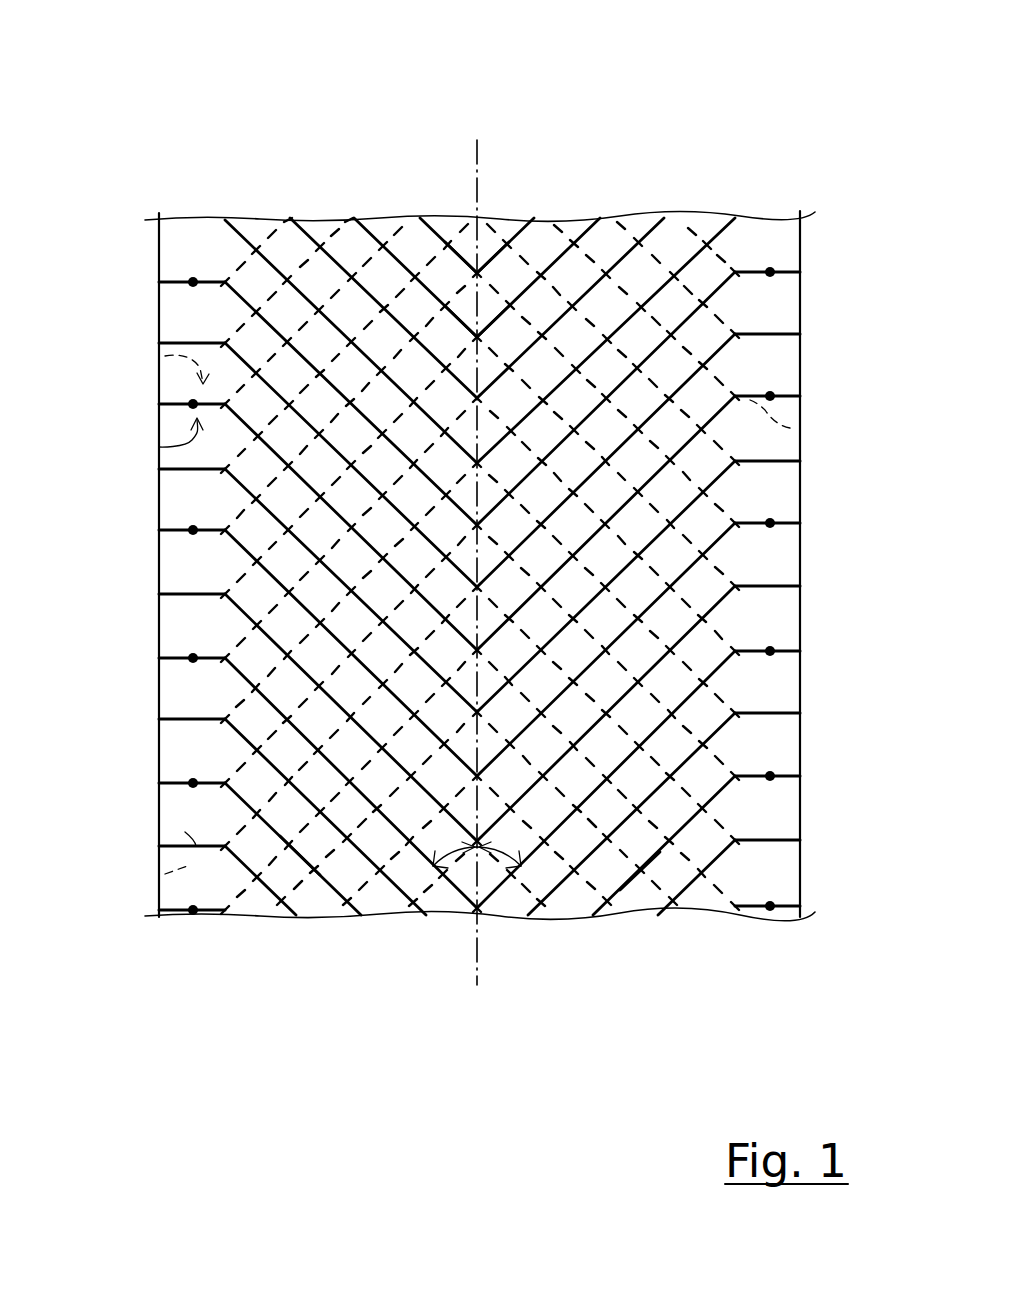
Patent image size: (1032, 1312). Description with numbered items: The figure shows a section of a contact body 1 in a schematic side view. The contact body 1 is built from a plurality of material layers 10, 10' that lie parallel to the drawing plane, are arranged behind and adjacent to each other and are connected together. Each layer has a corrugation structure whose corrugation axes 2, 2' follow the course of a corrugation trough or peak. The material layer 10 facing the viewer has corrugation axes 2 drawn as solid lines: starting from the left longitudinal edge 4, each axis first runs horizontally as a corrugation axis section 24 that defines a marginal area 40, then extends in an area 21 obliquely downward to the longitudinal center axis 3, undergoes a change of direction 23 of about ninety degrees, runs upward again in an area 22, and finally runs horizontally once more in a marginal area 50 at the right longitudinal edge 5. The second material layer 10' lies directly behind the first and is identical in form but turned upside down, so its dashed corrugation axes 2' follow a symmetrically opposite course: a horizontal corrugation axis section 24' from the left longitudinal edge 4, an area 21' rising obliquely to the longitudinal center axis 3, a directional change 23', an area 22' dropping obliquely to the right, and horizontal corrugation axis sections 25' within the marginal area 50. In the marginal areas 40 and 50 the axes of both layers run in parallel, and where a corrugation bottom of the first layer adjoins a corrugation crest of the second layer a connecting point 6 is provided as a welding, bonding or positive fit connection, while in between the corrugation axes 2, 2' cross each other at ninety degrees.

The contact body 1 is at (368, 118).
The corrugation axes 2 is at (483, 566).
The corrugation axes 2' is at (484, 566).
The longitudinal center axis 3 is at (479, 152).
The left longitudinal edge 4 is at (159, 563).
The right longitudinal edge 5 is at (800, 496).
The connecting point 6 is at (190, 280).
The material layer 10 is at (143, 469).
The material layer 10' is at (146, 343).
The area 21 is at (274, 924).
The area 21' is at (321, 946).
The area 22 is at (645, 929).
The area 22' is at (584, 913).
The change of direction 23 is at (464, 245).
The directional change 23' is at (540, 236).
The corrugation axis section 24 is at (132, 825).
The corrugation axis section 24' is at (125, 879).
The corrugation axis section 25' is at (824, 428).
The marginal area 40 is at (222, 196).
The marginal area 50 is at (800, 188).